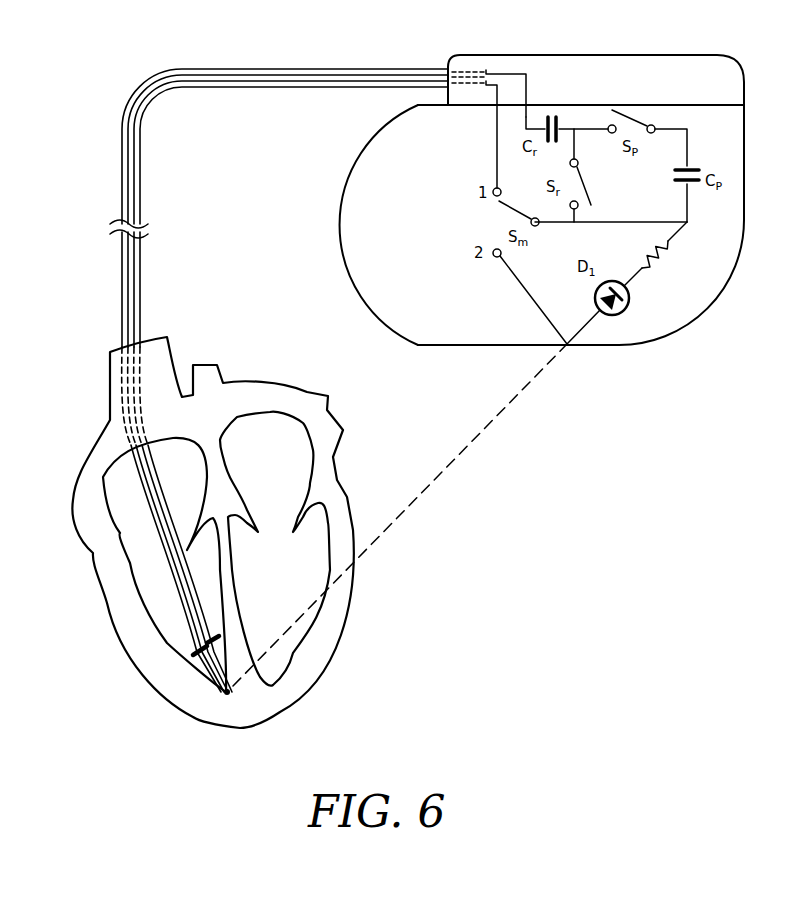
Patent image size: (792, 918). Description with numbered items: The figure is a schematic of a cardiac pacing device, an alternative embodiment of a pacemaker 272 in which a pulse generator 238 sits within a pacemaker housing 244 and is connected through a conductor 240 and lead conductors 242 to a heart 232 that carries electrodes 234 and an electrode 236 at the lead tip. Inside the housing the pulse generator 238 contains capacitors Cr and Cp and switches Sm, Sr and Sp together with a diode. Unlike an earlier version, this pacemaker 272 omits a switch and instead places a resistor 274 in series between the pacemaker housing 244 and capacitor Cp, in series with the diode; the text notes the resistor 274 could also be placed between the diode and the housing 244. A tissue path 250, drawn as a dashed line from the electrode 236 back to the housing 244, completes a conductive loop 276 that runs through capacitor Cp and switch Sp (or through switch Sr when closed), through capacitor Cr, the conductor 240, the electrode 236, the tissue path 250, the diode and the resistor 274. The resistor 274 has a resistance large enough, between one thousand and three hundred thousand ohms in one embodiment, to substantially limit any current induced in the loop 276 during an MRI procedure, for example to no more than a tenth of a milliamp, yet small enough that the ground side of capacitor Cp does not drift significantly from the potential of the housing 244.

The heart 232 is at (174, 682).
The ring electrodes 234 is at (196, 654).
The electrode 236 is at (227, 697).
The pulse generator 238 is at (731, 131).
The conductor 240 is at (120, 113).
The lead conductors 242 is at (155, 104).
The pacemaker housing 244 is at (637, 344).
The tissue path 250 is at (466, 444).
The pacemaker 272 is at (726, 393).
The resistor 274 is at (660, 266).
The conductive loop 276 is at (680, 232).